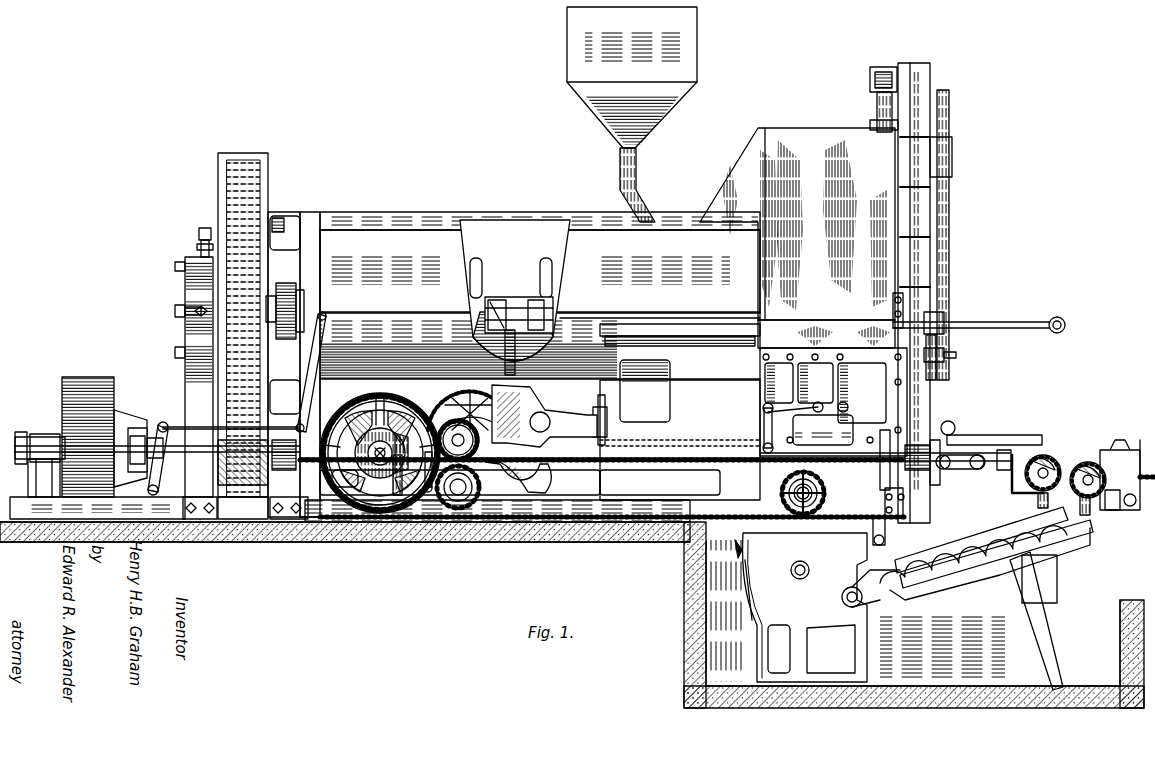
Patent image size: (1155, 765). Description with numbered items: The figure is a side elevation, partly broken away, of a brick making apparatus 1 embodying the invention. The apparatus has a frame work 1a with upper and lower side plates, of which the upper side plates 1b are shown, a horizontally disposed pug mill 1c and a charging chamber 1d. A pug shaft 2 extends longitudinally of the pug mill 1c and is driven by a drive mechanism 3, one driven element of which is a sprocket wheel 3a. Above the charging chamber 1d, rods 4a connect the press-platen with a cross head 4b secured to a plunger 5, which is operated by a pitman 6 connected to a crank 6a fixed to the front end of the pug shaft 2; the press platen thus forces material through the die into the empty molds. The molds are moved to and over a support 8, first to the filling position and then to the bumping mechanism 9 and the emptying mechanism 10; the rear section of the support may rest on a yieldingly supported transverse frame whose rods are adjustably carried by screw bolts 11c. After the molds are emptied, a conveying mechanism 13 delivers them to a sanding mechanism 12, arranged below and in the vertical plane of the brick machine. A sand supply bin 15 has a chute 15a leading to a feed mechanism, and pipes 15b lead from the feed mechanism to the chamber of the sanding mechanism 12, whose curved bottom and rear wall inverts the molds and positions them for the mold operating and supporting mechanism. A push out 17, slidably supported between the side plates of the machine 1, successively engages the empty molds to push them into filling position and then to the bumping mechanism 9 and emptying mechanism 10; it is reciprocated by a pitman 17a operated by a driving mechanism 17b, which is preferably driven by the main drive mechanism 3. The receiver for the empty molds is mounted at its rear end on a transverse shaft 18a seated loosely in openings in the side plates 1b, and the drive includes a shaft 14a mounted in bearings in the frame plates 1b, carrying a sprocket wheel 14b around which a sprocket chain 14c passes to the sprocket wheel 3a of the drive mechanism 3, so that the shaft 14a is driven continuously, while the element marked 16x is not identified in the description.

The brick making apparatus 1 is at (540, 349).
The frame work 1a is at (680, 438).
The upper side plate 1b is at (833, 402).
The pug mill 1c is at (540, 271).
The charging chamber 1d is at (797, 238).
The pug shaft 2 is at (282, 297).
The driving mechanism 3 is at (104, 436).
The sprocket wheel 3a is at (528, 480).
The rods 4a is at (870, 122).
The cross head 4b is at (880, 66).
The plunger 5 is at (915, 70).
The pitman 6 is at (948, 222).
The crank 6a is at (946, 340).
The support 8 is at (1006, 450).
The bumping mechanism 9 is at (958, 437).
The emptying mechanism 10 is at (1090, 468).
The screw bolts 11c is at (886, 518).
The sanding mechanism 12 is at (786, 607).
The conveying mechanism 13 is at (967, 598).
The shaft 14a is at (794, 494).
The sprocket wheel 14b is at (826, 488).
The sprocket chain 14c is at (683, 470).
The sand supply bin 15 is at (572, 42).
The chute 15a is at (638, 174).
The pipes 15b is at (735, 540).
The link 16x is at (766, 408).
The push out 17 is at (823, 430).
The pitman 17a is at (604, 412).
The driving mechanism 17b is at (372, 391).
The transverse shaft 18a is at (780, 420).